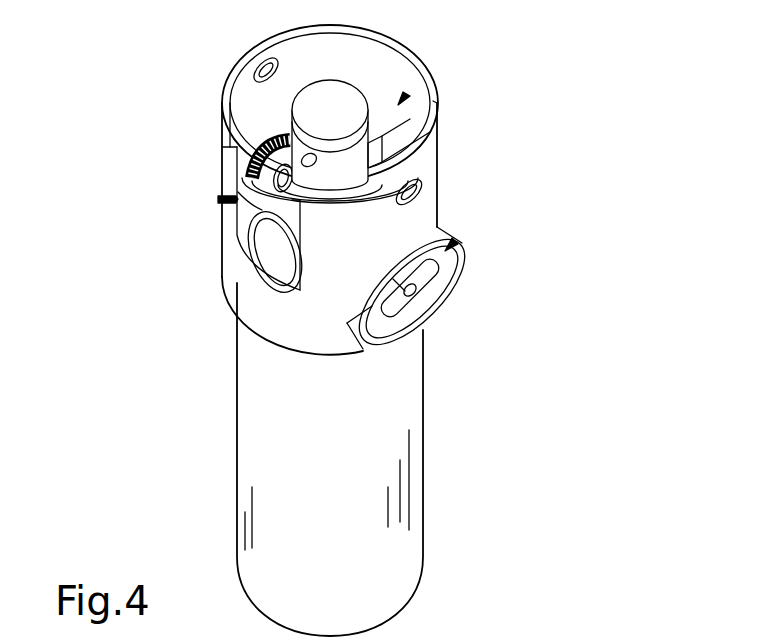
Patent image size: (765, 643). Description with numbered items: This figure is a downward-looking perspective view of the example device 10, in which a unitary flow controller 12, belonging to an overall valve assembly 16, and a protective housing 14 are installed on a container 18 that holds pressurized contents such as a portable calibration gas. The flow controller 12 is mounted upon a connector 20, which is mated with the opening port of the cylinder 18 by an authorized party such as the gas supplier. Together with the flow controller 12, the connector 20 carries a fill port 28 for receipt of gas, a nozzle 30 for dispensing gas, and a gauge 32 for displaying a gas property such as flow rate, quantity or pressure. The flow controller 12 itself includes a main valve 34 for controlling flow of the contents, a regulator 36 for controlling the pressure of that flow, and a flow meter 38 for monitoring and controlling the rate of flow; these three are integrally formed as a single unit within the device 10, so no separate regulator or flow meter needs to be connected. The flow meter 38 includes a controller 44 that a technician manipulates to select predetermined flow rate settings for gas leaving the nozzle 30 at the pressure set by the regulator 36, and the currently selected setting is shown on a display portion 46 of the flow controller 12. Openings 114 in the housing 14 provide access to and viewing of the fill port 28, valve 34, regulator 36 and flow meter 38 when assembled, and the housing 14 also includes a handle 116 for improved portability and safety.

The device 10 is at (550, 52).
The flow controller 12 is at (386, 135).
The protective housing 14 is at (439, 193).
The valve assembly 16 is at (307, 72).
The container 18 is at (253, 421).
The connector 20 is at (245, 198).
The fill port 28 is at (232, 134).
The nozzle 30 is at (383, 150).
The gauge 32 is at (270, 255).
The main valve 34 is at (430, 277).
The regulator 36 is at (313, 174).
The flow meter 38 is at (287, 128).
The controller 44 is at (351, 103).
The display portion 46 is at (316, 167).
The openings 114 is at (406, 94).
The handle 116 is at (433, 100).